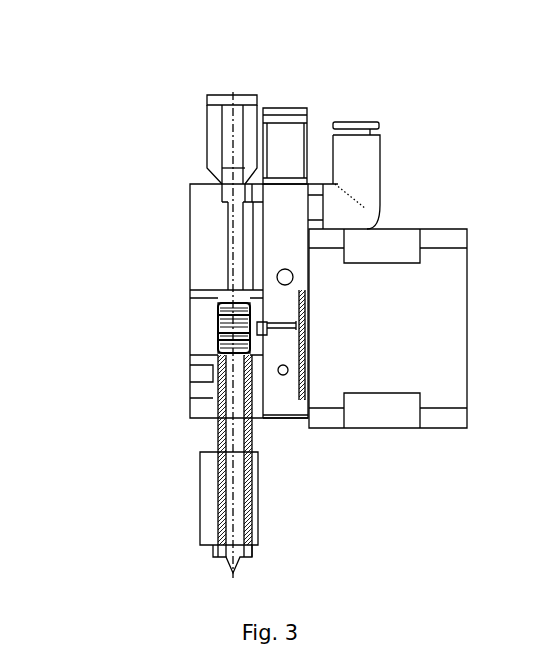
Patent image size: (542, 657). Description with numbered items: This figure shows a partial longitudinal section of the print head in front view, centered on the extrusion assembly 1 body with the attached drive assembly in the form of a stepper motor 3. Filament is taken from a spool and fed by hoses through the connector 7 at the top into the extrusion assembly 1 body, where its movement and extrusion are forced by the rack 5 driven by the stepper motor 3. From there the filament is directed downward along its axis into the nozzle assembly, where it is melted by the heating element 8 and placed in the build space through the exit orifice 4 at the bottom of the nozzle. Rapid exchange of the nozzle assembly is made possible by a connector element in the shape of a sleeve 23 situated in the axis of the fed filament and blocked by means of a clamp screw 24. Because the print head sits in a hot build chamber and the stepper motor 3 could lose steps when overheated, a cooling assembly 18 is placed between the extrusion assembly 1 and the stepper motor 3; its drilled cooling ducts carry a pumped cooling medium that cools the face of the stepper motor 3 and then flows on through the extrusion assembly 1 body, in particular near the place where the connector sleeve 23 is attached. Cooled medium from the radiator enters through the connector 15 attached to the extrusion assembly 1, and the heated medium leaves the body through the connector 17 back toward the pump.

The extrusion assembly 1 is at (190, 222).
The stepper motor 3 is at (405, 228).
The exit orifice 4 is at (217, 563).
The rack 5 is at (210, 320).
The connector 7 is at (205, 123).
The heating element 8 is at (194, 485).
The connector 15 is at (364, 120).
The connector 17 is at (307, 108).
The cooling assembly 18 is at (290, 422).
The sleeve 23 is at (208, 446).
The clamp screw 24 is at (188, 392).